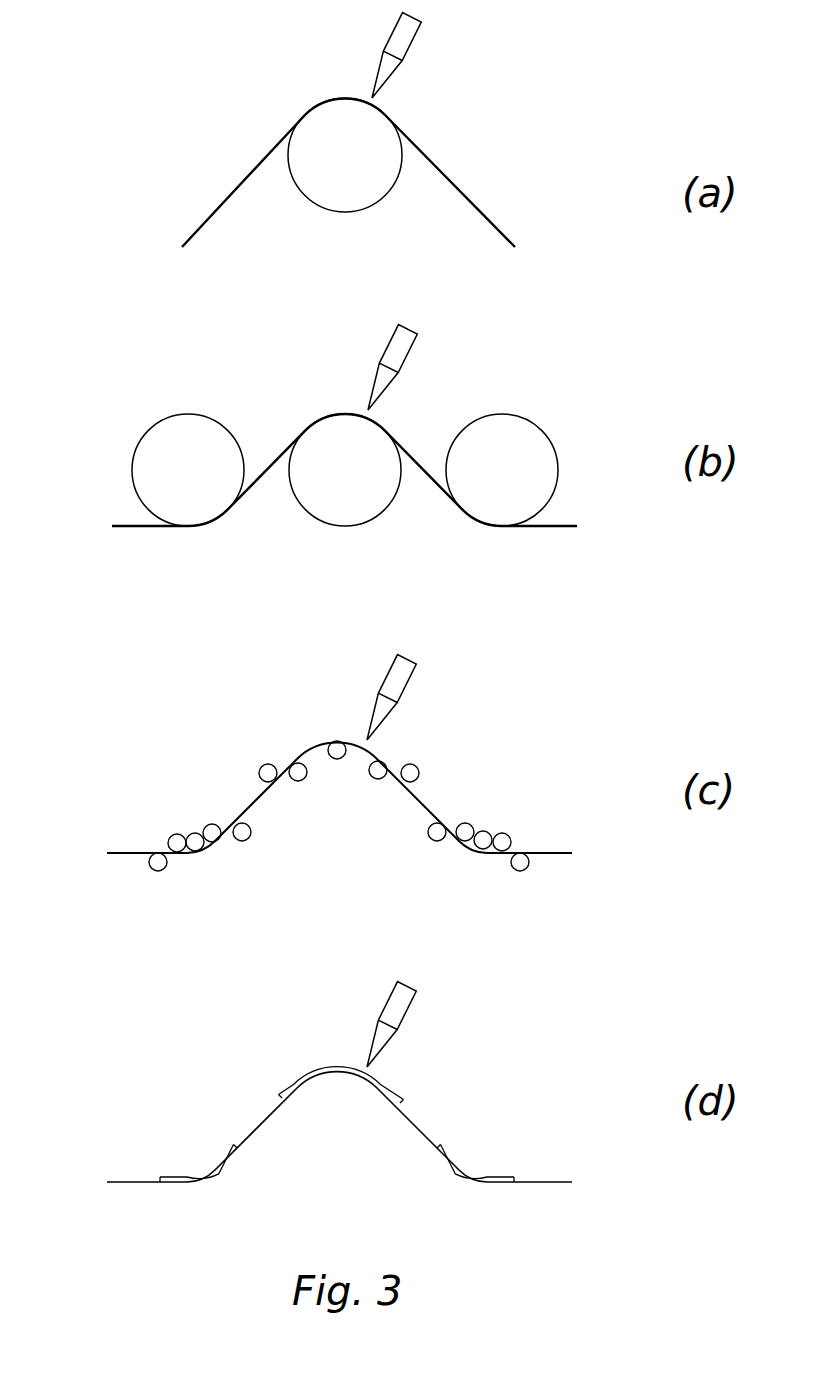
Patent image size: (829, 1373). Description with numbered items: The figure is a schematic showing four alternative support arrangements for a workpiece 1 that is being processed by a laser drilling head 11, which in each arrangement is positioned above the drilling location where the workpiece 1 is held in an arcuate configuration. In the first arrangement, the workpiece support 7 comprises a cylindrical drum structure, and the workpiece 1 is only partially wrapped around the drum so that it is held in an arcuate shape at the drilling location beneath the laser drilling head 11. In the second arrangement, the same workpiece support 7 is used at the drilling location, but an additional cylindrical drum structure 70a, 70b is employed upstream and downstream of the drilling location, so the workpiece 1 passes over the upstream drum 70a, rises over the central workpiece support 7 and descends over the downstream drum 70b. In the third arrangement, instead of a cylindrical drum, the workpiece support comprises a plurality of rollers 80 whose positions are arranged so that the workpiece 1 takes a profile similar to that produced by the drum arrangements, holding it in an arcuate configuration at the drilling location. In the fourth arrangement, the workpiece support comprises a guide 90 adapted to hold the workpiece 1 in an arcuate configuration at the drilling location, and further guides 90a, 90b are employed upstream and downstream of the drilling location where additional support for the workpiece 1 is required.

The workpiece 1 is at (460, 190).
The workpiece support 7 is at (363, 182).
The laser drilling head 11 is at (405, 38).
The additional cylindrical drum structure 70a is at (170, 445).
The additional cylindrical drum structure 70b is at (533, 458).
The rollers 80 is at (265, 772).
The guide 90 is at (333, 1073).
The further guide 90a is at (203, 1184).
The further guide 90b is at (473, 1185).